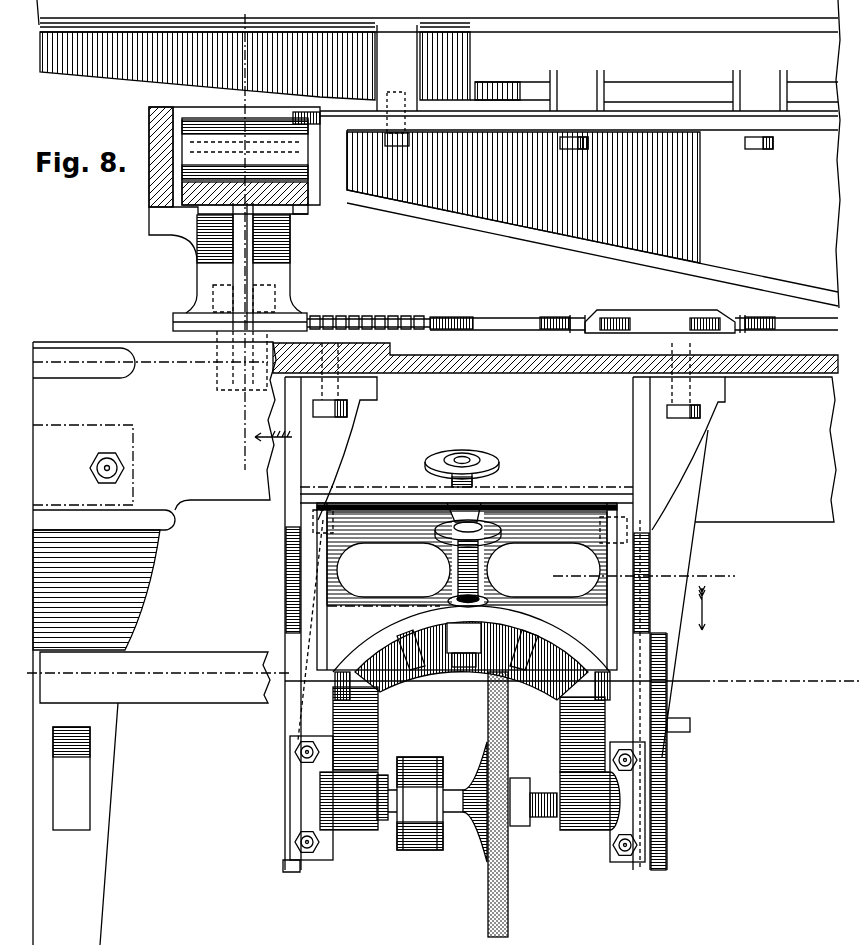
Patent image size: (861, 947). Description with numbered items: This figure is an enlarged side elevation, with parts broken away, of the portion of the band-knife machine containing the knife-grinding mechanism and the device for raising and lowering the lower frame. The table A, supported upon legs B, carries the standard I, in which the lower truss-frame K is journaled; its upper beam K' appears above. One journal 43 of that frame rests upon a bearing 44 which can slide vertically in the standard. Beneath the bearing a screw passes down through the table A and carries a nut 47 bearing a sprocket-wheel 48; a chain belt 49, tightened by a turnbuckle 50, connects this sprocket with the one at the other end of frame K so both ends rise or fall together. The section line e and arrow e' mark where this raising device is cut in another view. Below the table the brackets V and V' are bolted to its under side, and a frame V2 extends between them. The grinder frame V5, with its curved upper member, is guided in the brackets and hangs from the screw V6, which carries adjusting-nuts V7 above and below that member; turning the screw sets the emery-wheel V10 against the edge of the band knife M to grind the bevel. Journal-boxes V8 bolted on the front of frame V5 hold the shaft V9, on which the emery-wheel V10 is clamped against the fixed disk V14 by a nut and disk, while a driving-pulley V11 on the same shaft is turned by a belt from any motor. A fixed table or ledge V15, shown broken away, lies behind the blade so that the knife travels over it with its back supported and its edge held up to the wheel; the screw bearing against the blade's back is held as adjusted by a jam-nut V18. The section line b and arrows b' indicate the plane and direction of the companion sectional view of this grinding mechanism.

The upper beam K' is at (579, 82).
The lower truss-frame K is at (592, 218).
The journal 43 is at (245, 161).
The bearing 44 is at (301, 209).
The standard I is at (224, 266).
The nut 47 is at (283, 285).
The sprocket-wheel 48 is at (173, 320).
The chain belt 49 is at (368, 312).
The turnbuckle 50 is at (634, 312).
The section line e is at (243, 245).
The direction arrow e' is at (270, 445).
The table A is at (435, 485).
The fixed table or ledge V15 is at (200, 706).
The legs B is at (113, 806).
The endless band knife M is at (573, 669).
The bracket V is at (461, 607).
The bracket V' is at (679, 606).
The frame V2 is at (466, 486).
The adjusting-nuts V7 is at (474, 458).
The screw V6 is at (482, 588).
The frame V5 is at (566, 625).
The journal-boxes V8 is at (297, 800).
The driving-pulley V11 is at (407, 850).
The shaft V9 is at (452, 822).
The fixed disk V14 is at (478, 772).
The emery-wheel V10 is at (507, 862).
The jam-nut V18 is at (519, 778).
The section line b is at (643, 575).
The direction arrows b' is at (713, 608).